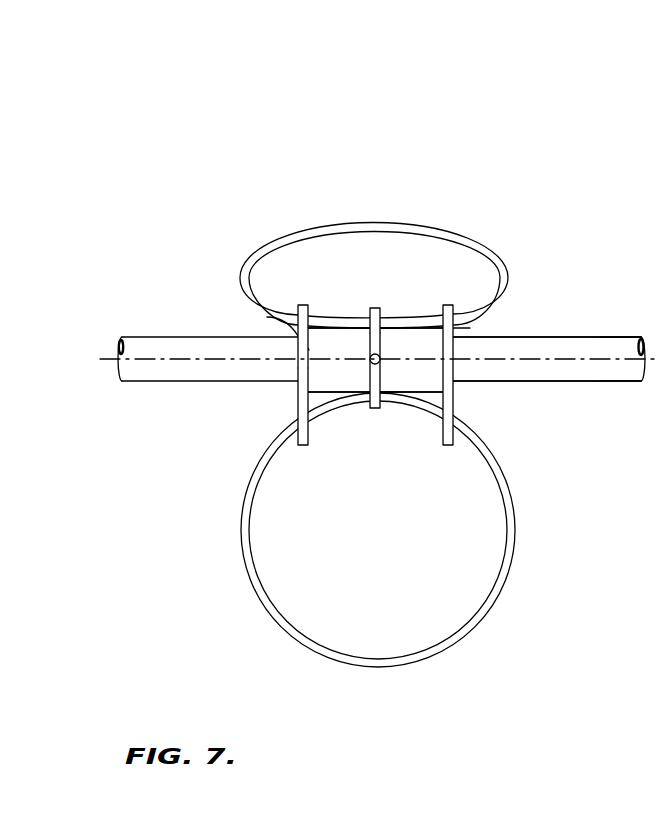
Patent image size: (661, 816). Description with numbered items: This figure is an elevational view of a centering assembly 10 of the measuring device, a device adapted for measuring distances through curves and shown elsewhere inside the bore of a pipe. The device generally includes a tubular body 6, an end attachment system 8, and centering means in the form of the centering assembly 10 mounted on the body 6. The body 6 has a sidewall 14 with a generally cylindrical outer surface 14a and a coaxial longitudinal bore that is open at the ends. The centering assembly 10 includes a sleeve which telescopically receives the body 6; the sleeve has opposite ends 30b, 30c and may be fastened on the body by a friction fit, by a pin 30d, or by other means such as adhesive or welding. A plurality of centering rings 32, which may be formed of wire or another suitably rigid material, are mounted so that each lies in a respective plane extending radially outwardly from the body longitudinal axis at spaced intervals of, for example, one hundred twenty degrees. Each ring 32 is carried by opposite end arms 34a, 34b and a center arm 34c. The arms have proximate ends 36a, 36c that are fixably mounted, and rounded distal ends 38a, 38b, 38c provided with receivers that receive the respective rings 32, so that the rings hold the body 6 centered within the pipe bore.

The centering assembly 10 is at (252, 200).
The end attachment system 8 is at (138, 327).
The body 6 is at (593, 381).
The sidewall 14 is at (507, 381).
The cylindrical outer surface 14a is at (589, 337).
The centering ring 32 is at (473, 239).
The sleeve end 30b is at (267, 317).
The sleeve end 30c is at (453, 348).
The pin 30d is at (387, 353).
The end arm 34a is at (298, 398).
The end arm 34b is at (444, 450).
The center arm 34c is at (361, 411).
The proximate end 36a is at (297, 371).
The proximate end 36c is at (371, 333).
The distal end 38a is at (298, 447).
The distal end 38b is at (446, 449).
The distal end 38c is at (373, 308).